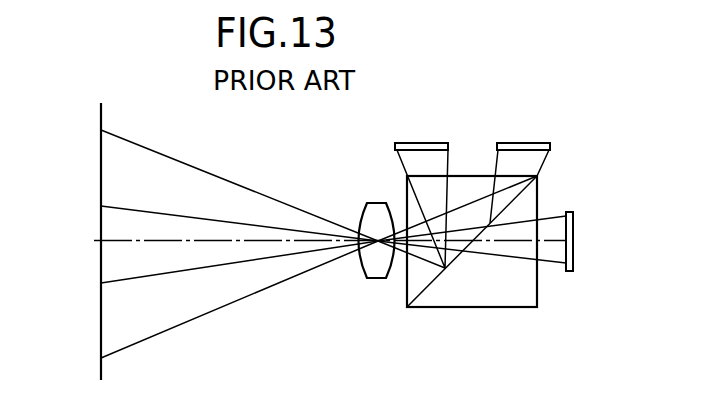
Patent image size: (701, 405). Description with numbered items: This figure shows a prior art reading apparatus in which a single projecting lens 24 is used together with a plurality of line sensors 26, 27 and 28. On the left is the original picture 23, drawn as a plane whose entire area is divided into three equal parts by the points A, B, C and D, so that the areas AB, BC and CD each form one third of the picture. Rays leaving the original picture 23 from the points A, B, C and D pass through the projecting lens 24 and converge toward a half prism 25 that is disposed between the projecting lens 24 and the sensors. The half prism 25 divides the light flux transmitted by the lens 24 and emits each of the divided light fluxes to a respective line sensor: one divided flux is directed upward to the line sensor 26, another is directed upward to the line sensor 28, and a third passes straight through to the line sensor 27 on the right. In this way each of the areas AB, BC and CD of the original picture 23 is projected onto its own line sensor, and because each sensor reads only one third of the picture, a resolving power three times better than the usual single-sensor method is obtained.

The original picture 23 is at (101, 165).
The projecting lens 24 is at (375, 203).
The half prism 25 is at (473, 308).
The line sensor 26 is at (423, 143).
The line sensor 27 is at (574, 241).
The line sensor 28 is at (521, 143).
The boundary point A is at (101, 130).
The boundary point B is at (101, 206).
The boundary point C is at (101, 283).
The boundary point D is at (101, 358).